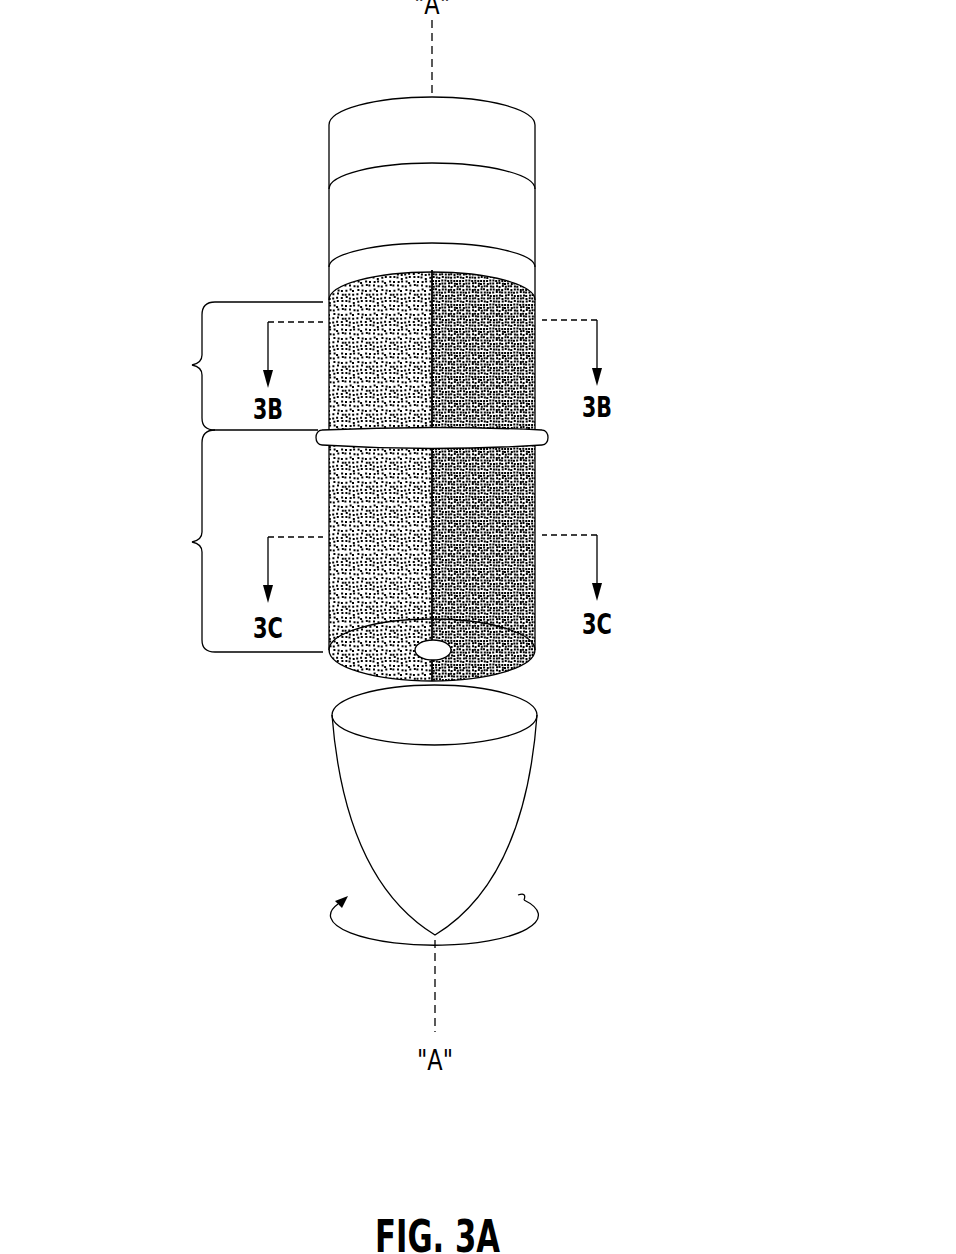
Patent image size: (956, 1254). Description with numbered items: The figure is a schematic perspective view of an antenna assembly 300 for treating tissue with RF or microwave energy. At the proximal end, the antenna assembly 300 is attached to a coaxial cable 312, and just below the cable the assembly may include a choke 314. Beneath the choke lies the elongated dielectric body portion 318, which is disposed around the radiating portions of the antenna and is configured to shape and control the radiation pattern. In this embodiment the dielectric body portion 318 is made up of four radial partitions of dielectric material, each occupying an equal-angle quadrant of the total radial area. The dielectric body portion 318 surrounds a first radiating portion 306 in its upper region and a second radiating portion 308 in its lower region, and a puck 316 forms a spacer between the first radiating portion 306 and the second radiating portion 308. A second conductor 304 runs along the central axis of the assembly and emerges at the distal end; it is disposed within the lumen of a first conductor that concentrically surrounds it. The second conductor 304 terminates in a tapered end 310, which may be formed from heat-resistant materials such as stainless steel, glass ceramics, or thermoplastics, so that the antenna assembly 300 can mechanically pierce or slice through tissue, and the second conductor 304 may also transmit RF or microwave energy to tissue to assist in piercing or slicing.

The antenna assembly 300 is at (700, 118).
The second conductor 304 is at (433, 646).
The first radiating portion 306 is at (230, 366).
The second radiating portion 308 is at (230, 541).
The tapered end 310 is at (520, 797).
The coaxial cable 312 is at (535, 148).
The choke 314 is at (535, 215).
The puck 316 is at (550, 440).
The dielectric body portion 318 is at (542, 299).